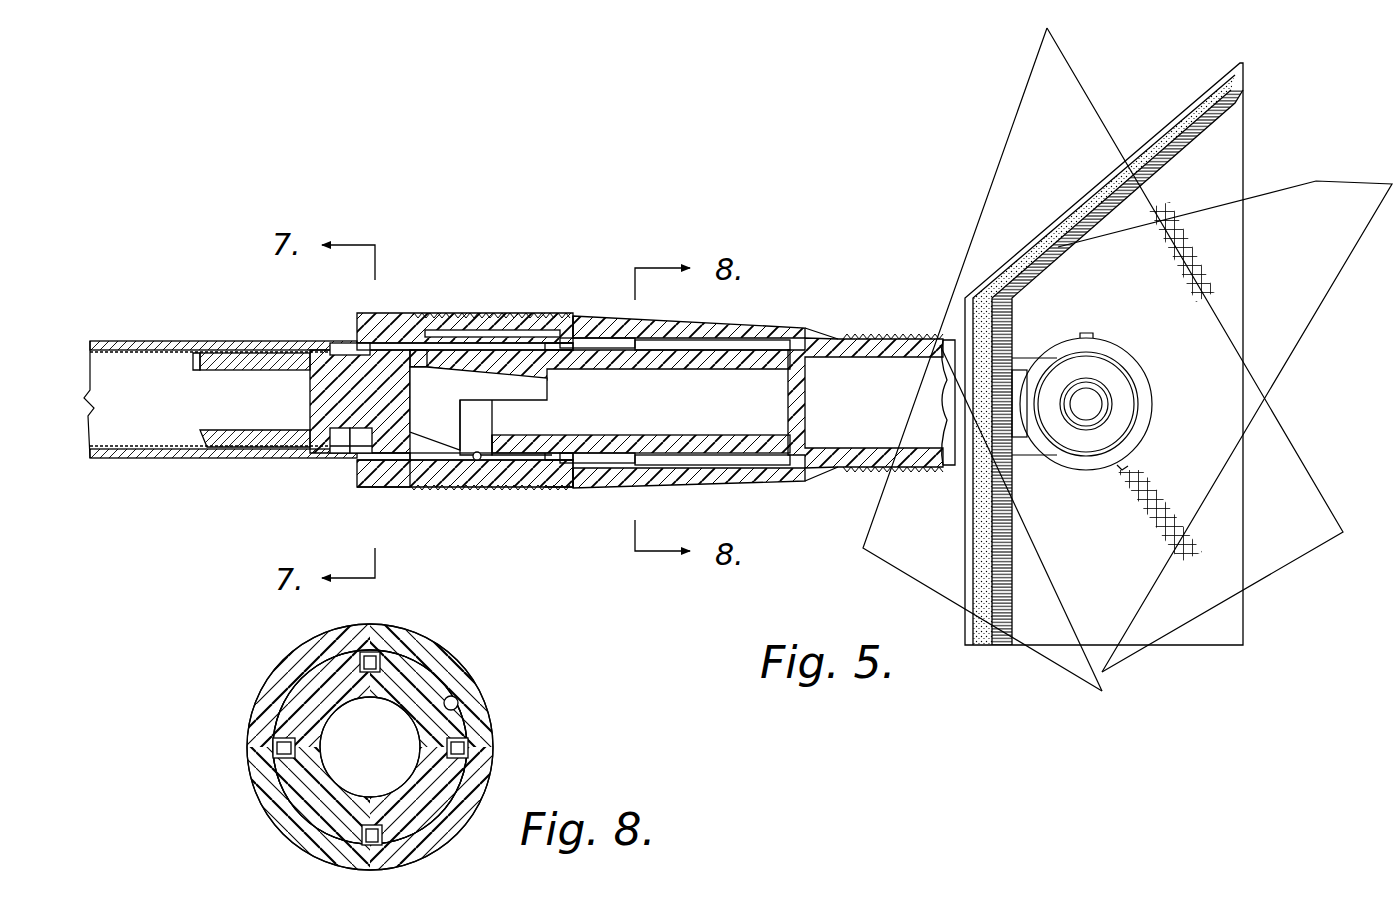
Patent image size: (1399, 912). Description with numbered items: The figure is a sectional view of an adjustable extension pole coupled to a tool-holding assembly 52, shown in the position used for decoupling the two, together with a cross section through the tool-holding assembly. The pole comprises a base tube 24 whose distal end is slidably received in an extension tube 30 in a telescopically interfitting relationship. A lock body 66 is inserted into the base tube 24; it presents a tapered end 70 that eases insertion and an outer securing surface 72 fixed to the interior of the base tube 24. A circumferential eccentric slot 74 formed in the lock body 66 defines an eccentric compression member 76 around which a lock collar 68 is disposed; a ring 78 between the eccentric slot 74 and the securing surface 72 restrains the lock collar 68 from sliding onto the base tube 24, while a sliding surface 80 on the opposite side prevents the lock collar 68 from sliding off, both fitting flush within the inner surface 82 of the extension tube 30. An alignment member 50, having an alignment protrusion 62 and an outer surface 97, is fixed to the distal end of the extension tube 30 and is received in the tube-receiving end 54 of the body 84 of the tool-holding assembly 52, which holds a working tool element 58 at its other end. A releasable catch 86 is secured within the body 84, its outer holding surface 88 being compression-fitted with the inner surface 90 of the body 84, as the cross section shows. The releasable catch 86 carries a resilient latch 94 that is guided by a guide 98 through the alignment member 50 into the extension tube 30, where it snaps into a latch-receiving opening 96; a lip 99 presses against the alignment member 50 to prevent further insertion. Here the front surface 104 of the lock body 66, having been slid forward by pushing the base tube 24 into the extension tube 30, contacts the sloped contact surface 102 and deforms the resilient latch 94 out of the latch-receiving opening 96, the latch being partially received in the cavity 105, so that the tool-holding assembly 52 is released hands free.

In FIG. 5, the base tube 24 is at (127, 455).
In FIG. 5, the extension tube 30 is at (181, 460).
In FIG. 5, the alignment member 50 is at (368, 481).
In FIG. 5, the tool-holding assembly 52 is at (617, 312).
In FIG. 5, the tube-receiving end 54 is at (543, 488).
In FIG. 5, the working tool element 58 is at (1192, 78).
In FIG. 5, the alignment protrusion 62 is at (374, 316).
In FIG. 5, the lock body 66 is at (342, 358).
In FIG. 5, the lock collar 68 is at (334, 450).
In FIG. 5, the tapered end 70 is at (200, 352).
In FIG. 5, the outer securing surface 72 is at (258, 352).
In FIG. 5, the circumferential eccentric slot 74 is at (338, 440).
In FIG. 5, the eccentric compression member 76 is at (356, 442).
In FIG. 5, the ring 78 is at (322, 341).
In FIG. 5, the sliding surface 80 is at (440, 455).
In FIG. 5, the inner surface 82 is at (479, 460).
In FIG. 5, the body 84 is at (740, 323).
In FIG. 8, the body 84 is at (452, 665).
In FIG. 5, the releasable catch 86 is at (593, 355).
In FIG. 8, the releasable catch 86 is at (448, 770).
In FIG. 5, the outer holding surface 88 is at (623, 468).
In FIG. 8, the outer holding surface 88 is at (468, 729).
In FIG. 5, the inner surface 90 is at (408, 468).
In FIG. 8, the inner surface 90 is at (460, 705).
In FIG. 5, the resilient latch 94 is at (503, 343).
In FIG. 5, the latch-receiving opening 96 is at (490, 343).
In FIG. 5, the outer surface 97 is at (378, 464).
In FIG. 5, the guide 98 is at (533, 448).
In FIG. 5, the lip 99 is at (558, 465).
In FIG. 5, the sloped contact surface 102 is at (432, 366).
In FIG. 5, the front surface 104 is at (475, 330).
In FIG. 5, the cavity 105 is at (447, 412).